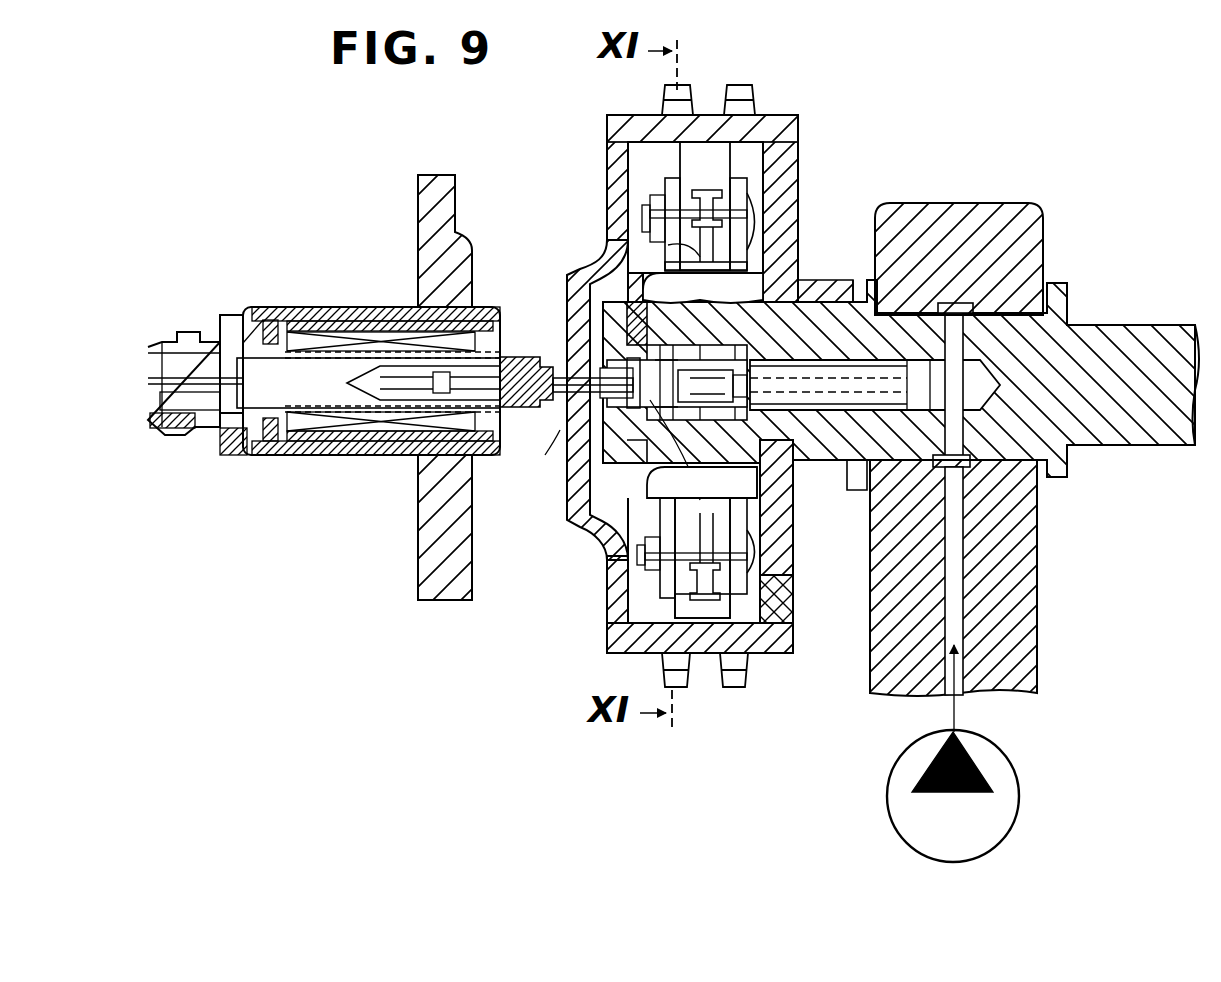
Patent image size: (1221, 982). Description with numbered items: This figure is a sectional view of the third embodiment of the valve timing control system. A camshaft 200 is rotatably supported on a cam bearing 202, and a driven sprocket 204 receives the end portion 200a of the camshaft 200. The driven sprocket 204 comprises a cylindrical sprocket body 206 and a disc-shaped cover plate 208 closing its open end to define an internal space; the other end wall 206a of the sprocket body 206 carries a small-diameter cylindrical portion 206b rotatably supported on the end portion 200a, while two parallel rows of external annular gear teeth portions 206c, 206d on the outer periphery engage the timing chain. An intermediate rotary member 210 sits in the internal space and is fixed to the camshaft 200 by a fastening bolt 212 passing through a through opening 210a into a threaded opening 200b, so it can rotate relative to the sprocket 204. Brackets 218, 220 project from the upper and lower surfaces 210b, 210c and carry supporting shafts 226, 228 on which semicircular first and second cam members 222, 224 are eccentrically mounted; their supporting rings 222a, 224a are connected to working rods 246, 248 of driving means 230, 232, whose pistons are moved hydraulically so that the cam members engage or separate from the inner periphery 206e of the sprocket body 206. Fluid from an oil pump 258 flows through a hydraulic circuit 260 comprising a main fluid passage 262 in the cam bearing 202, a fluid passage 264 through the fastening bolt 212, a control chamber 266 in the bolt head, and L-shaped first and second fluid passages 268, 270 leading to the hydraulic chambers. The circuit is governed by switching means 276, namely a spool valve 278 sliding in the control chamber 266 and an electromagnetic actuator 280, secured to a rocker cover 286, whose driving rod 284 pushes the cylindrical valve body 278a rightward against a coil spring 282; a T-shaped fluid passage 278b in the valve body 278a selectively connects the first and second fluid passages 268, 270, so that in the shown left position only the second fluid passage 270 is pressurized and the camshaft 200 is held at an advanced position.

The camshaft 200 is at (1135, 328).
The end portion of the camshaft 200a is at (790, 520).
The threaded opening 200b is at (912, 483).
The cam bearing 202 is at (1030, 230).
The driven sprocket 204 is at (818, 119).
The sprocket body 206 is at (765, 113).
The other end wall 206a is at (850, 215).
The small-diameter cylindrical portion 206b is at (838, 293).
The external annular gear teeth portion 206c is at (667, 95).
The external annular gear teeth portion 206d is at (740, 92).
The inner periphery of the sprocket body 206e is at (705, 645).
The cover plate 208 is at (612, 622).
The intermediate rotary member 210 is at (625, 540).
The through opening 210a is at (605, 478).
The upper surface 210b is at (795, 238).
The lower surface 210c is at (780, 548).
The fastening bolt 212 is at (567, 282).
The bracket 218 is at (690, 165).
The bracket 220 is at (773, 623).
The first cam member 222 is at (612, 180).
The supporting ring 222a is at (745, 200).
The second cam member 224 is at (650, 600).
The supporting ring 224a is at (620, 622).
The supporting shaft 226 is at (757, 215).
The supporting shaft 228 is at (680, 556).
The driving means 230 is at (722, 182).
The driving means 232 is at (727, 613).
The working rod 246 is at (665, 185).
The working rod 248 is at (737, 588).
The oil pump 258 is at (1013, 765).
The hydraulic circuit 260 is at (975, 572).
The main fluid passage 262 is at (957, 505).
The fluid passage 264 is at (885, 385).
The control chamber 266 is at (785, 488).
The first fluid passage 268 is at (640, 455).
The second fluid passage 270 is at (692, 473).
The switching means 276 is at (545, 455).
The spool valve 278 is at (700, 257).
The valve body 278a is at (668, 245).
The T-shaped fluid passage 278b is at (650, 400).
The electromagnetic actuator 280 is at (328, 308).
The coil spring 282 is at (745, 322).
The driving rod 284 is at (525, 358).
The rocker cover 286 is at (418, 203).